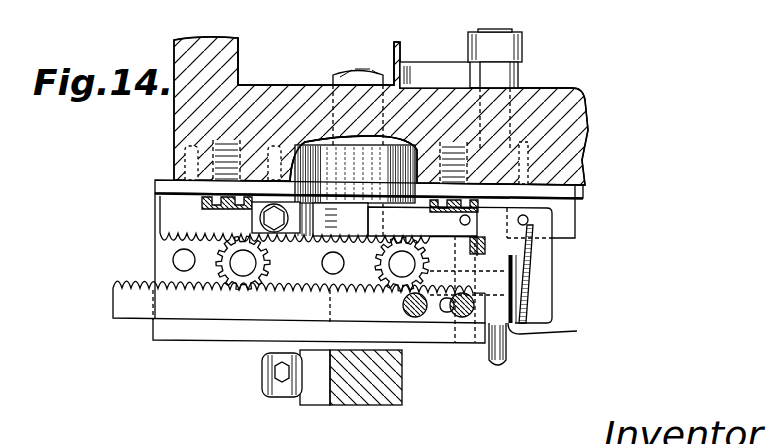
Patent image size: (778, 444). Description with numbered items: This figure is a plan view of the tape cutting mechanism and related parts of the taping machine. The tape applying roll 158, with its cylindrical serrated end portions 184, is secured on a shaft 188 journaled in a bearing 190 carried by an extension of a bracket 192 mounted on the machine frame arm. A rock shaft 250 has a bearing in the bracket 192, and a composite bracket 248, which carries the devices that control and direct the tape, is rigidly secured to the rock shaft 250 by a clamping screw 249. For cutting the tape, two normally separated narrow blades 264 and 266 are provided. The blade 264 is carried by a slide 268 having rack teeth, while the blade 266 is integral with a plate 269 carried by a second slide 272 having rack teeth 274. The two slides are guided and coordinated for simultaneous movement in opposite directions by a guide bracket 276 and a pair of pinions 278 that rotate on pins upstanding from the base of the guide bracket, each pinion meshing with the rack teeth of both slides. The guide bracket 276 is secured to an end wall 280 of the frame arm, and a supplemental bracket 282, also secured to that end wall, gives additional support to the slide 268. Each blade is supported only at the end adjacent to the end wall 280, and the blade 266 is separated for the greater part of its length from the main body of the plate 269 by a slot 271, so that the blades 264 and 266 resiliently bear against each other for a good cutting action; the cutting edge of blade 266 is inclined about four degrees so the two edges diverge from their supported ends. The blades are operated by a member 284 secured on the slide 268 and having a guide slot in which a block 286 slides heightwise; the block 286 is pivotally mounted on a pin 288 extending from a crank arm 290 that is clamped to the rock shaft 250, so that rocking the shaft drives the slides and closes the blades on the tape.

The shaft 188 is at (510, 135).
The bracket 192 is at (332, 50).
The rock shaft 250 is at (338, 82).
The bearing 190 is at (423, 70).
The tape applying roll 158 is at (487, 75).
The end portions 184 is at (540, 0).
The end wall 280 is at (543, 93).
The guide bracket 276 is at (155, 184).
The slide 268 is at (170, 212).
The crank arm 290 is at (313, 147).
The block 286 is at (292, 280).
The member 284 is at (378, 283).
The pin 288 is at (350, 216).
The rack teeth 274 is at (133, 282).
The slide 272 is at (237, 313).
The pinions 278 is at (213, 280).
The plate 269 is at (435, 320).
The composite bracket 248 is at (392, 400).
The clamping screw 249 is at (290, 395).
The supplemental bracket 282 is at (567, 218).
The blade 264 is at (548, 277).
The blade 266 is at (523, 310).
The slot 271 is at (569, 325).